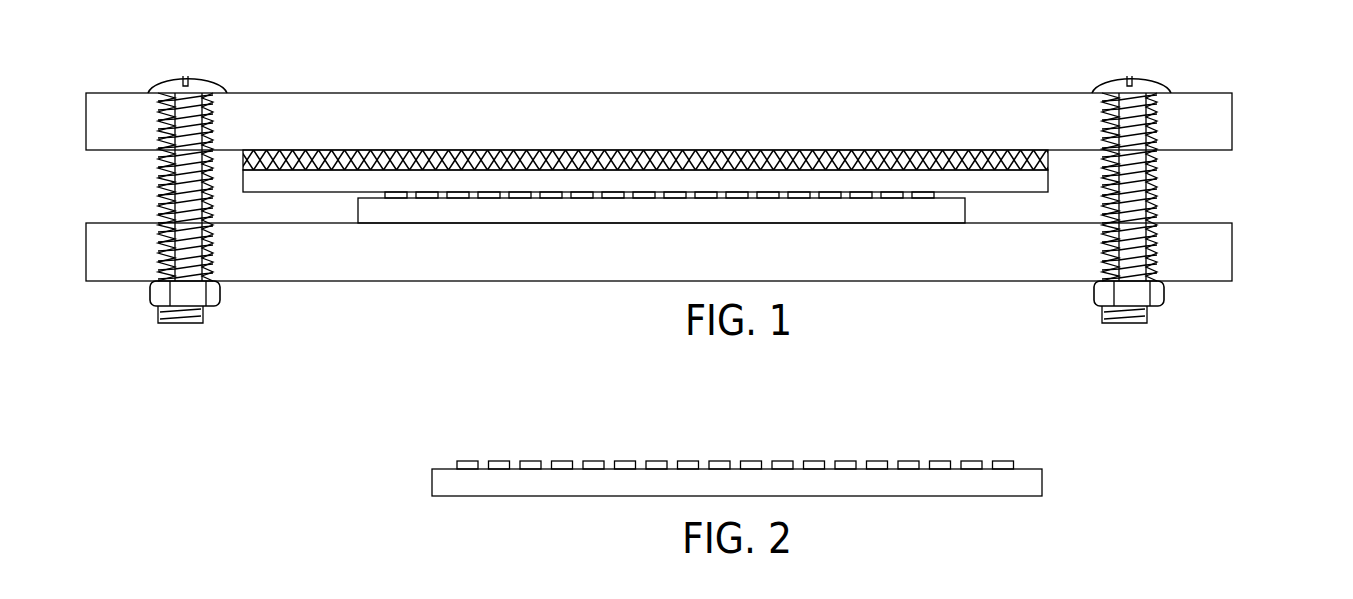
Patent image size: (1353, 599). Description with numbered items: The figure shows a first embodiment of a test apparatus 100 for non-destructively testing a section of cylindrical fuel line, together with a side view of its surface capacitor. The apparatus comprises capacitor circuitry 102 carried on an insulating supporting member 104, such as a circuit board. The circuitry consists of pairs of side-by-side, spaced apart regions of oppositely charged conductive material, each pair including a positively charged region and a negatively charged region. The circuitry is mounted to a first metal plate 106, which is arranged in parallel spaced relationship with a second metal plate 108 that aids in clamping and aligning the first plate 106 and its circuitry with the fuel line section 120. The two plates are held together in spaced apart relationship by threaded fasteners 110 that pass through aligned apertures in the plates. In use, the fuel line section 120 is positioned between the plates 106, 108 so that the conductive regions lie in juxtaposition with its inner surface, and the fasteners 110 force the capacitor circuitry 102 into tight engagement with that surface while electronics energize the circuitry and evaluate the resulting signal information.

In FIG. 1, the test apparatus 100 is at (1265, 78).
In FIG. 2, the capacitor circuitry 102 is at (688, 461).
In FIG. 2, the insulating supporting member 104 is at (472, 480).
In FIG. 1, the first metal plate 106 is at (313, 268).
In FIG. 1, the second metal plate 108 is at (593, 103).
In FIG. 1, the threaded fasteners 110 is at (197, 76).
In FIG. 1, the fuel line section 120 is at (1065, 193).